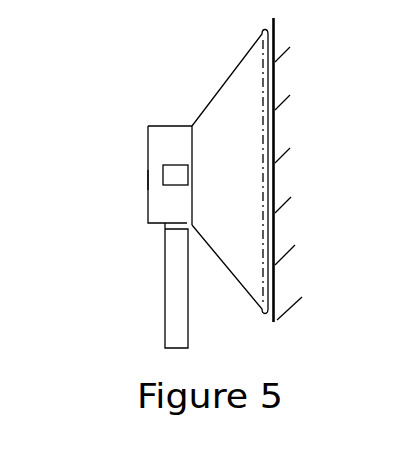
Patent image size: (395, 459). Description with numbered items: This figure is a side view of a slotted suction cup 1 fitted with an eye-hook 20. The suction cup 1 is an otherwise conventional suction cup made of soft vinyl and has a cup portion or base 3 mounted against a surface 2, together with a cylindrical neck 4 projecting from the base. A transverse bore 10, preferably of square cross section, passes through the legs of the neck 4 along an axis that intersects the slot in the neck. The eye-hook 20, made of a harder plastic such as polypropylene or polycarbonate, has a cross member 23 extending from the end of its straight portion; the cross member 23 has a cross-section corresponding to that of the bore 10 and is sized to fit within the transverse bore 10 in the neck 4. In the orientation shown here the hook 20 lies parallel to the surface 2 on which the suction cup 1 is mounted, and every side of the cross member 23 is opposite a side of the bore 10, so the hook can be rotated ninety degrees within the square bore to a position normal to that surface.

The slotted suction cup 1 is at (177, 200).
The surface 2 is at (273, 24).
The cup portion or base 3 is at (228, 78).
The cylindrical neck 4 is at (139, 148).
The transverse bore 10 is at (170, 179).
The eye-hook 20 is at (145, 278).
The cross member 23 is at (150, 180).